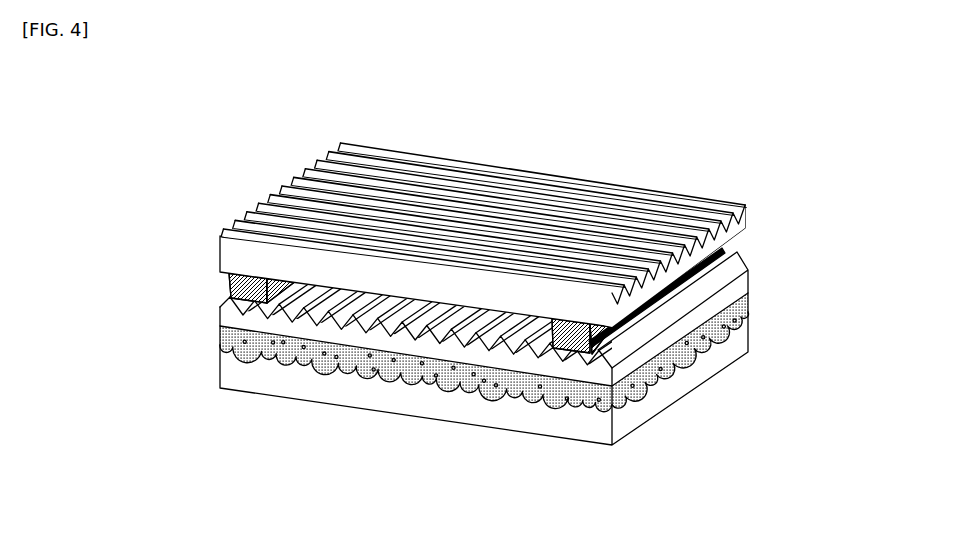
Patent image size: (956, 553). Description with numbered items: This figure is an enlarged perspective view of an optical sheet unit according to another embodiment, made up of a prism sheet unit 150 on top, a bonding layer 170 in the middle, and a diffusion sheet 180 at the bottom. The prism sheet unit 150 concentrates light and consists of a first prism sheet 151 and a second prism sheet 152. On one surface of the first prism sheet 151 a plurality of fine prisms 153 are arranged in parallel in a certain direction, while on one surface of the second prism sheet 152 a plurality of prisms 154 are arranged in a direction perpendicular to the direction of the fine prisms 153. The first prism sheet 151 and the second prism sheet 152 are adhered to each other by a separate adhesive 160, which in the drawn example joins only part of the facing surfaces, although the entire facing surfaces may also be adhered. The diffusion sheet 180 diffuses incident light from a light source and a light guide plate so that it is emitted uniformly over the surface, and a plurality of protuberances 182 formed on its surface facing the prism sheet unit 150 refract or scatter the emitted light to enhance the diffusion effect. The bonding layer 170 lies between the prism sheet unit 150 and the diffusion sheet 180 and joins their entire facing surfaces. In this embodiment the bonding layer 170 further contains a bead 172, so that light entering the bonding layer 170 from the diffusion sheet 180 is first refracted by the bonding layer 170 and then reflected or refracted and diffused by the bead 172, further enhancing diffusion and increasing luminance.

The prism sheet unit 150 is at (492, 313).
The first prism sheet 151 is at (220, 262).
The second prism sheet 152 is at (220, 315).
The fine prisms 153 is at (292, 184).
The prisms 154 is at (617, 338).
The adhesive 160 is at (230, 283).
The bonding layer 170 is at (220, 333).
The bead 172 is at (477, 375).
The diffusion sheet 180 is at (220, 375).
The protuberances 182 is at (540, 398).